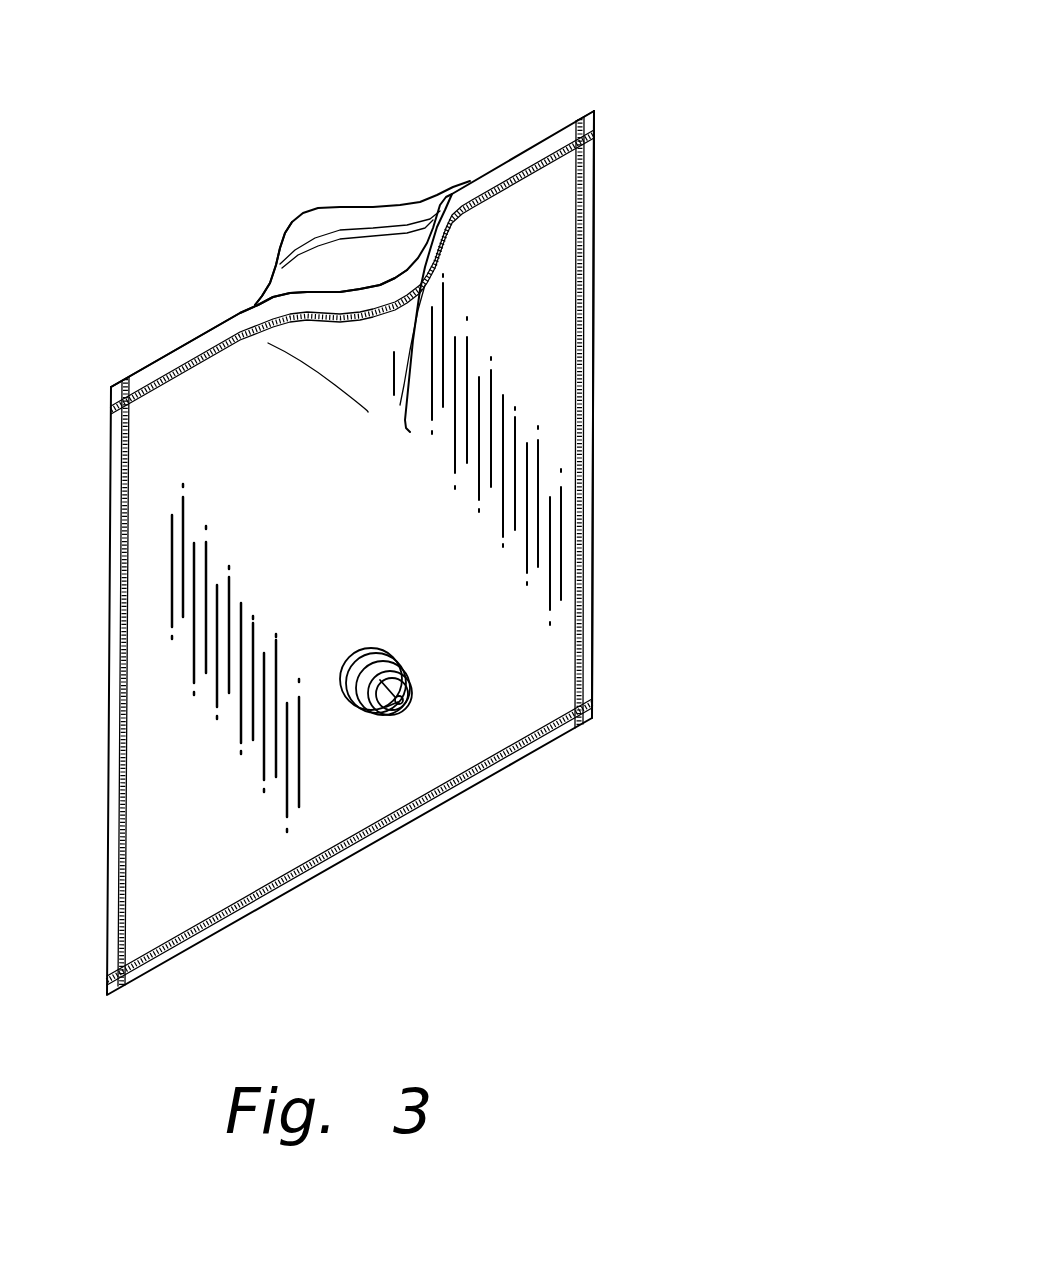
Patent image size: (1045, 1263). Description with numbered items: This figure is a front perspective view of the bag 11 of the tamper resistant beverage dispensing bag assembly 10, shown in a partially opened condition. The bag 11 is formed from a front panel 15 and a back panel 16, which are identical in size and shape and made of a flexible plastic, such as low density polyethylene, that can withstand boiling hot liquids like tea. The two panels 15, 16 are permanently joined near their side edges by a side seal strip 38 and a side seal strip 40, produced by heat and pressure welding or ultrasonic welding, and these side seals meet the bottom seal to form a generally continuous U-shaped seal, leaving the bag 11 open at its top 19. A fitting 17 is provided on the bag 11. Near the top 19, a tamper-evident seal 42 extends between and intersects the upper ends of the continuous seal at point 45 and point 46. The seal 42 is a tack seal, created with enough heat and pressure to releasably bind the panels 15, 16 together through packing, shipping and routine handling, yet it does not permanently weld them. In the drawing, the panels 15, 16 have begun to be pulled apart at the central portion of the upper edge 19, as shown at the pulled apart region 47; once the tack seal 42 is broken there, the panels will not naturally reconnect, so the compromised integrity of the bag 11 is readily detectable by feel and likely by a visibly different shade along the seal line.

The bag assembly 10 is at (665, 107).
The bag 11 is at (595, 269).
The front panel 15 is at (428, 265).
The back panel 16 is at (360, 208).
The fitting 17 is at (348, 674).
The top 19 is at (182, 348).
The side seal strip 38 is at (124, 545).
The side seal strip 40 is at (583, 368).
The tamper-evident seal 42 is at (172, 378).
The point 45 is at (126, 403).
The point 46 is at (584, 149).
The pulled apart region 47 is at (268, 256).